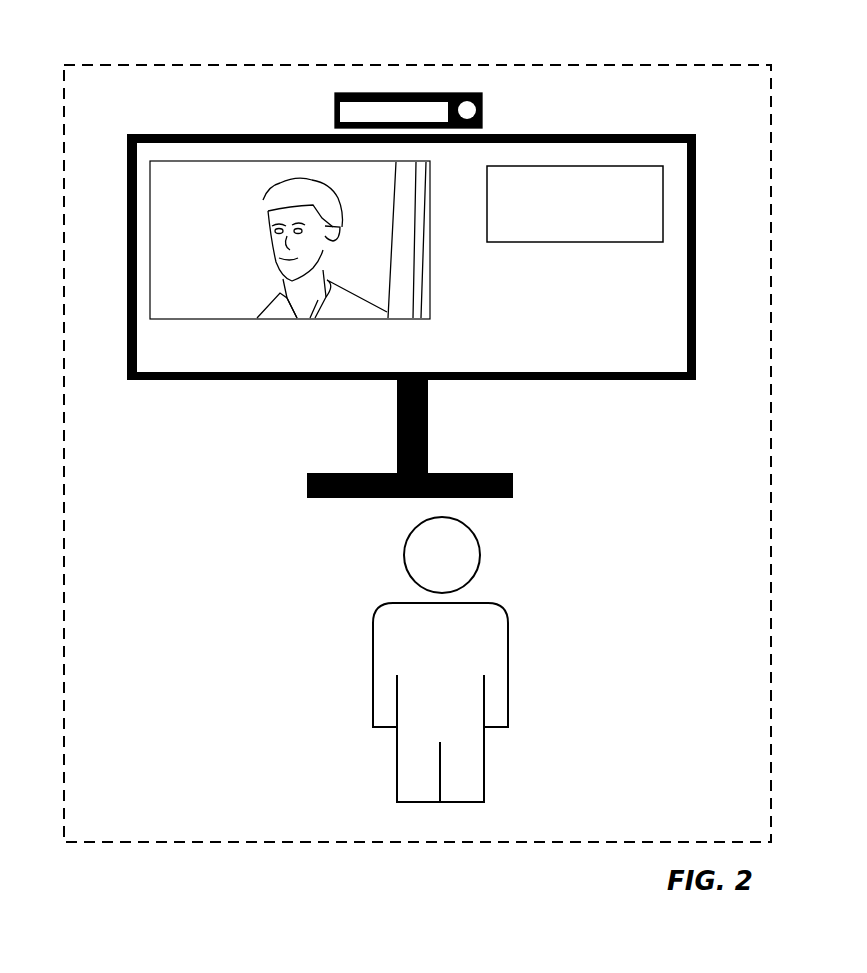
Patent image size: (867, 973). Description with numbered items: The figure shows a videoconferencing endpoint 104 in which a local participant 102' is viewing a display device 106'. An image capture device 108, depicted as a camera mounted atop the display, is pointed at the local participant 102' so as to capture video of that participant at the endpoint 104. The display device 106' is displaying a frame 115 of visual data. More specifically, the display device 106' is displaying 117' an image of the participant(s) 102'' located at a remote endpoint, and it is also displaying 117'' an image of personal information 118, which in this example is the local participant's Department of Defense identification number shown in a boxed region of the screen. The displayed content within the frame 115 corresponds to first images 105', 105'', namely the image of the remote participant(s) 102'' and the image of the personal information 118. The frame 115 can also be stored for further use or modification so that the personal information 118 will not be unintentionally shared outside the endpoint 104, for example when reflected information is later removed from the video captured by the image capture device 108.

The videoconferencing endpoint 104 is at (141, 64).
The display device 106' is at (403, 307).
The image capture device 108 is at (335, 110).
The frame 115 is at (638, 363).
The displaying 117' is at (290, 240).
The displaying 117'' is at (575, 204).
The personal information 118 is at (597, 197).
The first image 105' is at (293, 273).
The first image 105'' is at (575, 239).
The local participant 102' is at (440, 659).
The participant(s) at remote endpoint 102'' is at (303, 273).